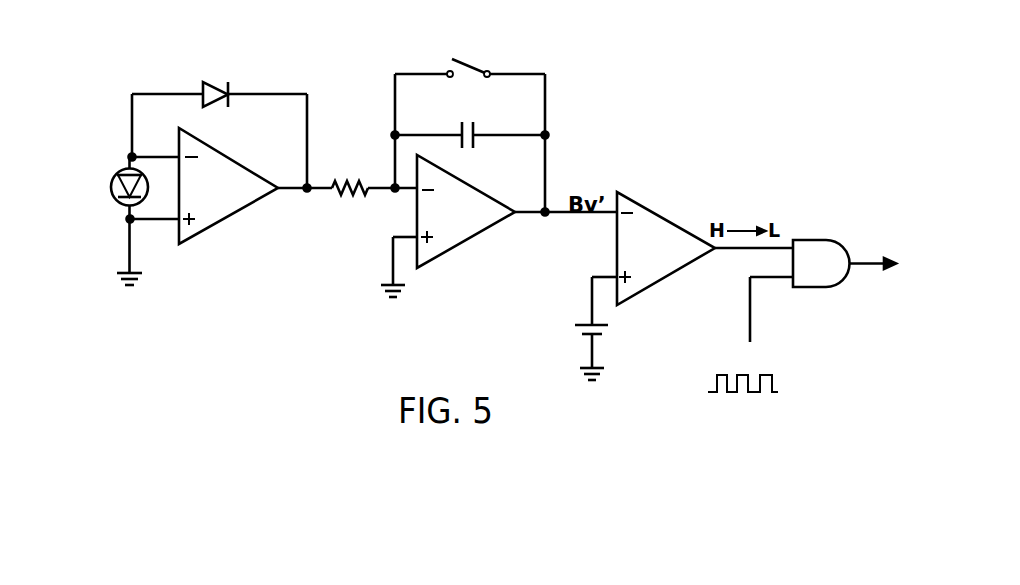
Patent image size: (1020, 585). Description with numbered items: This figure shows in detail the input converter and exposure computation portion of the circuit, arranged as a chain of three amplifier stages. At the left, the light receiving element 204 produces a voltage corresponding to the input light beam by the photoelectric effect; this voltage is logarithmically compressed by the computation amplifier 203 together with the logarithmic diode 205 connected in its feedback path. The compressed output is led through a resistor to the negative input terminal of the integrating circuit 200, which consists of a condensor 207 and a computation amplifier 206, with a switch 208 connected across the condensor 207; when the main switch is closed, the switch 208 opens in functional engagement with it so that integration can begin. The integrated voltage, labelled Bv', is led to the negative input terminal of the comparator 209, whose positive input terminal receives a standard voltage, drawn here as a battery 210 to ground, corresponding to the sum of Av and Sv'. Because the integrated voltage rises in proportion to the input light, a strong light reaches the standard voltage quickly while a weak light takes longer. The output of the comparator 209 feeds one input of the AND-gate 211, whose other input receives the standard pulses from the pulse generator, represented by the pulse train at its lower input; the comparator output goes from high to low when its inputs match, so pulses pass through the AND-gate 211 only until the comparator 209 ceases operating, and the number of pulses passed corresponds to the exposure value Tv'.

The integrating circuit 200 is at (497, 201).
The computation amplifier 203 is at (242, 210).
The light receiving element 204 is at (106, 165).
The logarithmic diode 205 is at (224, 82).
The computation amplifier 206 is at (497, 223).
The condensor 207 is at (480, 133).
The switch 208 is at (470, 63).
The comparator 209 is at (675, 221).
The reference voltage source 210 is at (580, 328).
The AND-gate 211 is at (828, 240).